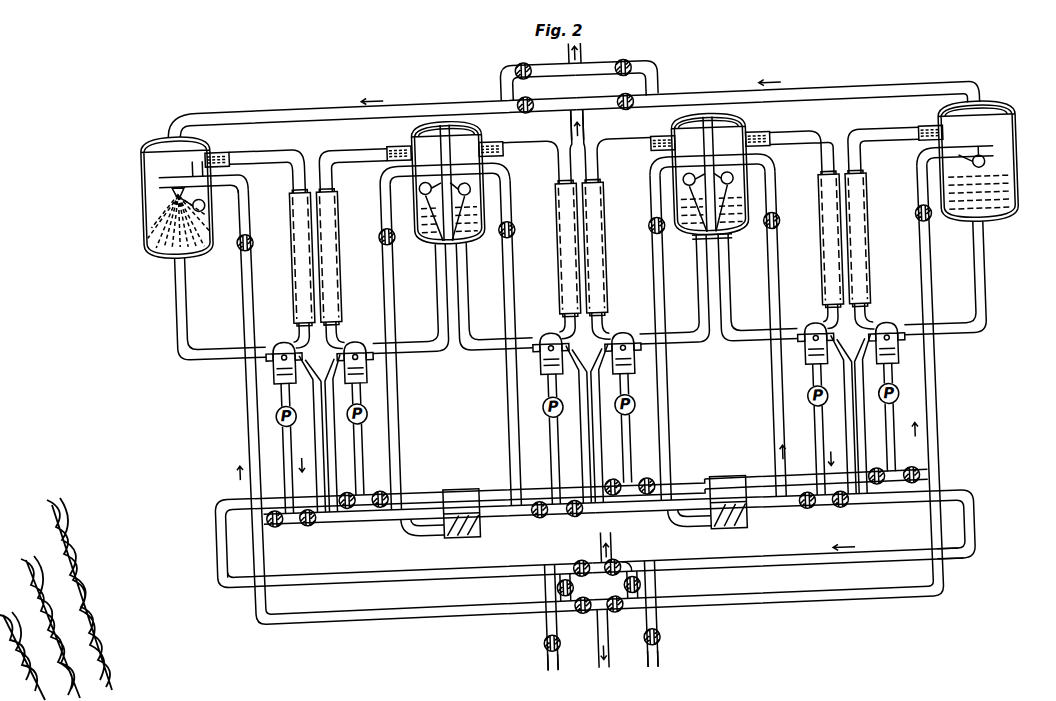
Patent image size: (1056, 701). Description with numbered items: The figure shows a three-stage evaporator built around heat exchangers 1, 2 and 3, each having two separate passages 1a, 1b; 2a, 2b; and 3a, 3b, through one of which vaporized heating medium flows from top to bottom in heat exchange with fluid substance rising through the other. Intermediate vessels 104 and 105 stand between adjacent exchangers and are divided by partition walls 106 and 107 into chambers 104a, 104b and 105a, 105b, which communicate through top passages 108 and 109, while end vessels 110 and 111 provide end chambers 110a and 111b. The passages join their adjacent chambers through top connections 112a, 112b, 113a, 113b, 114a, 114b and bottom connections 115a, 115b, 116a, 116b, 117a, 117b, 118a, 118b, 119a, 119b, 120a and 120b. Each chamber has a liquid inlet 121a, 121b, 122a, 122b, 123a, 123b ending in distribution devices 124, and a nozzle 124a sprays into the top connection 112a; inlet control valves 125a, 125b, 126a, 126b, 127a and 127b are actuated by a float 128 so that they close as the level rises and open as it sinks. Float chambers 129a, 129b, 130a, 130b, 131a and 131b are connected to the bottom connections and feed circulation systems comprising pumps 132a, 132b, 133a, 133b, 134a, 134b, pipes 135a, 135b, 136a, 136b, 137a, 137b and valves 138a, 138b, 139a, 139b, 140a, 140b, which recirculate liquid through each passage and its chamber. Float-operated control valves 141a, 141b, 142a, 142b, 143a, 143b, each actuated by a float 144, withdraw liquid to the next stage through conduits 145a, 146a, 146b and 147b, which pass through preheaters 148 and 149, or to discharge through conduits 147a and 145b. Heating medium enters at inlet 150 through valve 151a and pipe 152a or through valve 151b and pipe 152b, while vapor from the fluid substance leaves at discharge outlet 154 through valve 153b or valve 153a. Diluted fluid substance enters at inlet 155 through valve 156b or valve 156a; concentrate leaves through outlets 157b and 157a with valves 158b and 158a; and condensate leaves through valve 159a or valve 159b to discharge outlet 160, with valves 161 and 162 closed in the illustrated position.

The heat exchanger 1 is at (343, 273).
The passage 1a is at (302, 258).
The passage 1b is at (329, 257).
The heat exchanger 2 is at (609, 270).
The passage 2a is at (568, 248).
The passage 2b is at (595, 247).
The heat exchanger 3 is at (878, 297).
The passage 3a is at (831, 239).
The passage 3b is at (858, 238).
The intermediate vessel 104 is at (492, 136).
The chamber 104a is at (448, 183).
The chamber 104b is at (450, 121).
The intermediate vessel 105 is at (757, 131).
The chamber 105a is at (713, 173).
The chamber 105b is at (716, 120).
The partition wall 106 is at (403, 141).
The partition wall 107 is at (700, 248).
The top passage 108 is at (490, 138).
The top passage 109 is at (756, 128).
The end vessel 110 is at (148, 152).
The end chamber 110a is at (162, 186).
The end vessel 111 is at (1023, 132).
The end chamber 111b is at (976, 118).
The top connection 112a is at (292, 141).
The top connection 112b is at (360, 143).
The top connection 113a is at (552, 153).
The top connection 113b is at (624, 141).
The top connection 114a is at (818, 141).
The top connection 114b is at (888, 141).
The bottom connection 115a is at (179, 277).
The bottom connection 115b is at (409, 299).
The bottom connection 116a is at (290, 334).
The bottom connection 116b is at (358, 352).
The bottom connection 117a is at (494, 295).
The bottom connection 117b is at (673, 289).
The bottom connection 118a is at (544, 346).
The bottom connection 118b is at (626, 344).
The bottom connection 119a is at (758, 287).
The bottom connection 119b is at (944, 278).
The bottom connection 120a is at (812, 335).
The bottom connection 120b is at (889, 334).
The liquid inlet 121a is at (256, 275).
The liquid inlet 121b is at (386, 294).
The liquid inlet 122a is at (527, 342).
The liquid inlet 122b is at (656, 290).
The liquid inlet 123a is at (792, 333).
The liquid inlet 123b is at (923, 283).
The distribution device 124 is at (175, 190).
The nozzle 124a is at (236, 141).
The control valve 125a is at (262, 245).
The control valve 125b is at (384, 239).
The control valve 126a is at (523, 237).
The control valve 126b is at (653, 238).
The control valve 127a is at (791, 227).
The control valve 127b is at (920, 235).
The float 128 is at (212, 246).
The float chamber 129a is at (269, 395).
The float chamber 129b is at (373, 393).
The float chamber 130a is at (537, 386).
The float chamber 130b is at (641, 381).
The float chamber 131a is at (800, 363).
The float chamber 131b is at (905, 362).
The pump 132a is at (279, 424).
The pump 132b is at (374, 425).
The pump 133a is at (540, 417).
The pump 133b is at (639, 413).
The pump 134a is at (807, 389).
The pump 134b is at (902, 386).
The pipe 135a is at (275, 470).
The pipe 135b is at (342, 460).
The pipe 136a is at (538, 461).
The pipe 136b is at (643, 447).
The pipe 137a is at (806, 451).
The pipe 137b is at (907, 436).
The valve 138a is at (276, 530).
The valve 138b is at (386, 481).
The valve 139a is at (541, 520).
The valve 139b is at (645, 476).
The valve 140a is at (803, 512).
The valve 140b is at (915, 466).
The control valve 141a is at (314, 530).
The control valve 141b is at (345, 481).
The control valve 142a is at (576, 520).
The control valve 142b is at (611, 478).
The control valve 143a is at (843, 511).
The control valve 143b is at (880, 466).
The float 144 is at (272, 352).
The conduit 145a is at (430, 528).
The conduit 145b is at (347, 575).
The conduit 146a is at (785, 530).
The conduit 146b is at (460, 519).
The conduit 147a is at (778, 554).
The conduit 147b is at (816, 471).
The preheater 148 is at (442, 487).
The preheater 149 is at (712, 483).
The heating medium inlet 150 is at (593, 128).
The valve 151a is at (541, 101).
The valve 151b is at (629, 102).
The pipe 152a is at (288, 104).
The pipe 152b is at (808, 98).
The valve 153a is at (545, 56).
The valve 153b is at (635, 65).
The vapor discharge outlet 154 is at (591, 54).
The inlet 155 is at (616, 637).
The valve 156a is at (573, 618).
The valve 156b is at (626, 614).
The outlet 157a is at (647, 588).
The outlet 157b is at (537, 592).
The valve 158a is at (635, 661).
The valve 158b is at (569, 662).
The valve 159a is at (626, 565).
The valve 159b is at (572, 562).
The discharge outlet 160 is at (616, 554).
The valve 161 is at (554, 580).
The valve 162 is at (644, 575).